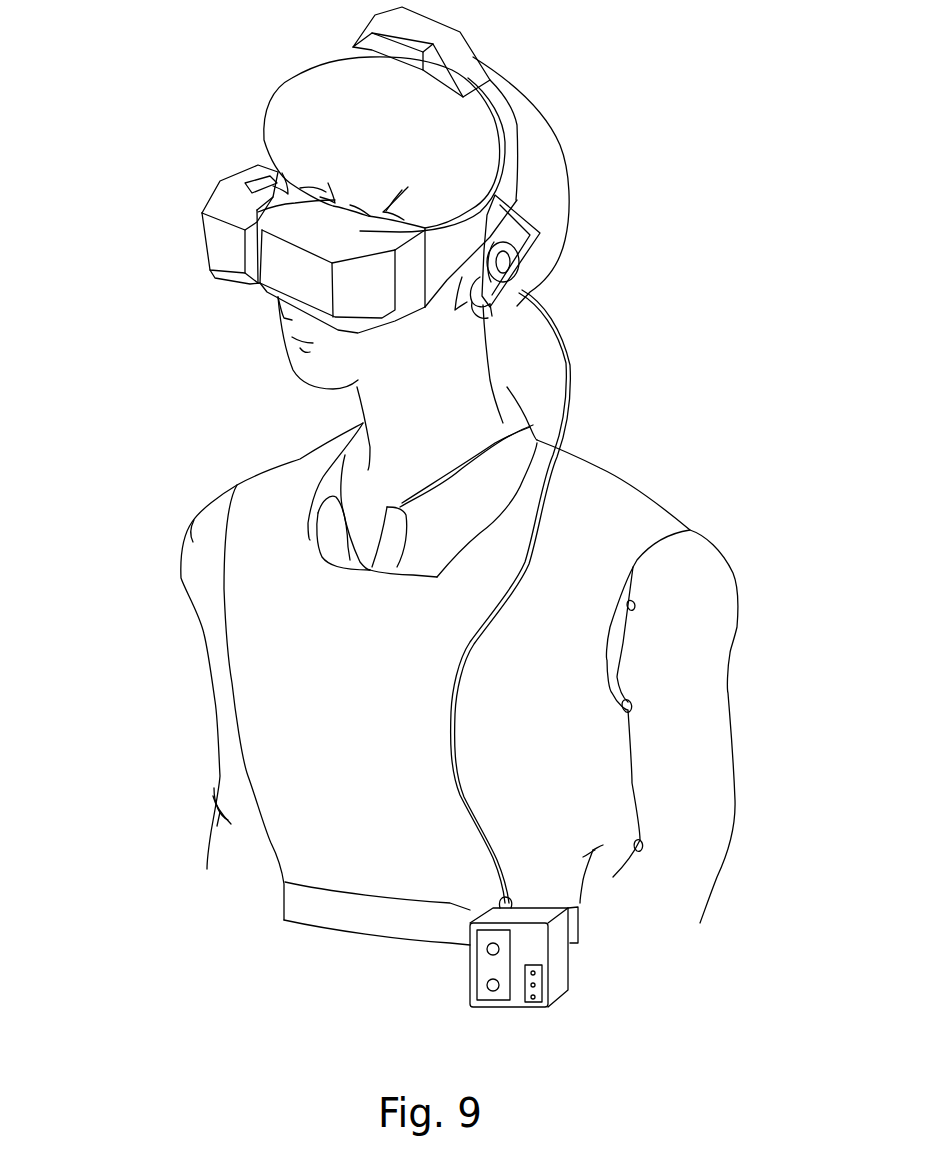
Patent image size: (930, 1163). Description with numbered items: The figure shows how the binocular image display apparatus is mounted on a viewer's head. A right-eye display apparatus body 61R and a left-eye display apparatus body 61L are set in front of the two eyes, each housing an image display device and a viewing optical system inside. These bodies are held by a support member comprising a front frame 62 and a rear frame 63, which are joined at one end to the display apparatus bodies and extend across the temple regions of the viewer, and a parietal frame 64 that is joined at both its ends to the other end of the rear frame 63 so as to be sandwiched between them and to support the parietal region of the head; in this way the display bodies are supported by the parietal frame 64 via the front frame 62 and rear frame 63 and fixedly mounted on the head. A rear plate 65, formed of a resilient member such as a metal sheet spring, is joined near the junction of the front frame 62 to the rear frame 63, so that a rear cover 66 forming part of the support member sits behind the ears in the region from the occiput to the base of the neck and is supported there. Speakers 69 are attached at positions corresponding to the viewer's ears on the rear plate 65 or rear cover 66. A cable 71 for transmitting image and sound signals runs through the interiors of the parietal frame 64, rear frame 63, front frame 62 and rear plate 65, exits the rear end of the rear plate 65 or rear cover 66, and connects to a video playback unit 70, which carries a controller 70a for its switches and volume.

The right-eye display apparatus body 61R is at (229, 287).
The left-eye display apparatus body 61L is at (358, 330).
The front frame 62 is at (424, 290).
The rear frame 63 is at (512, 163).
The parietal frame 64 is at (462, 55).
The rear plate 65 is at (532, 218).
The rear cover 66 is at (523, 273).
The speaker 69 is at (488, 300).
The video playback unit 70 is at (470, 983).
The controller 70a is at (537, 983).
The cable 71 is at (568, 412).